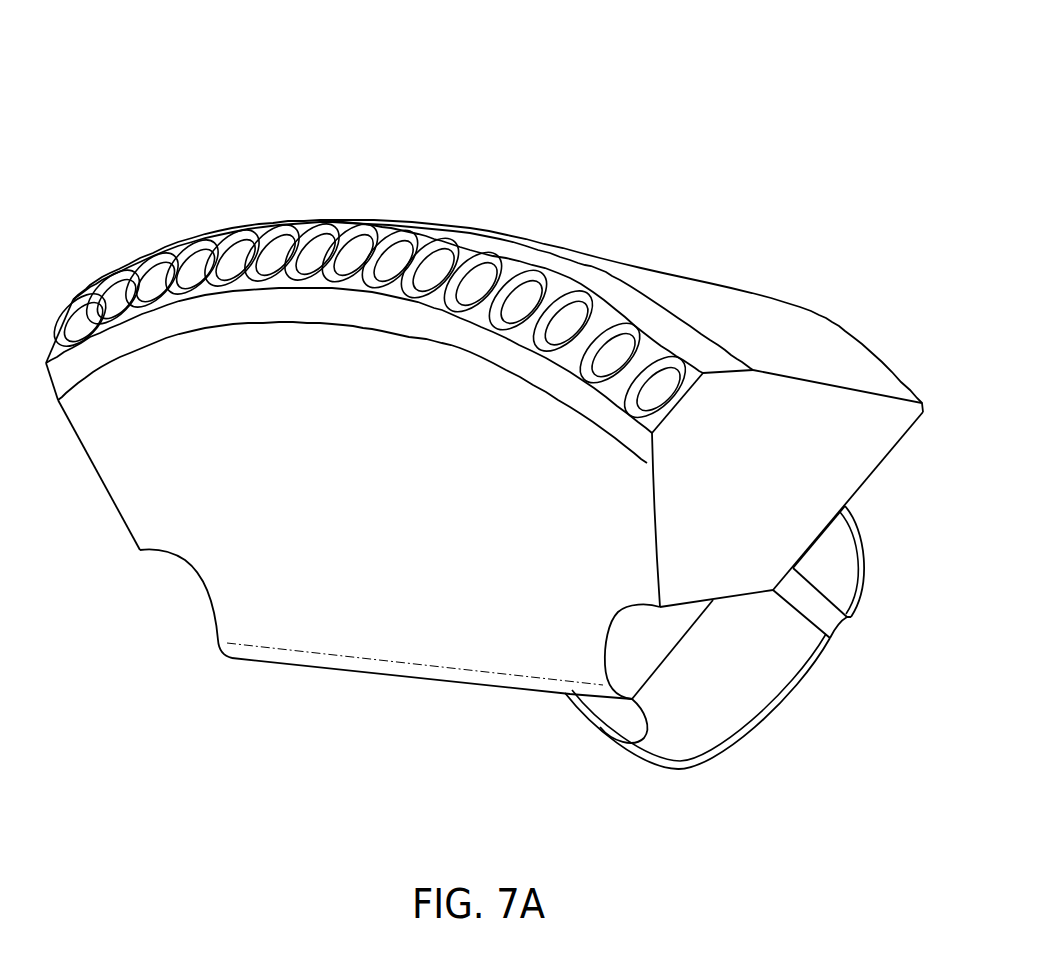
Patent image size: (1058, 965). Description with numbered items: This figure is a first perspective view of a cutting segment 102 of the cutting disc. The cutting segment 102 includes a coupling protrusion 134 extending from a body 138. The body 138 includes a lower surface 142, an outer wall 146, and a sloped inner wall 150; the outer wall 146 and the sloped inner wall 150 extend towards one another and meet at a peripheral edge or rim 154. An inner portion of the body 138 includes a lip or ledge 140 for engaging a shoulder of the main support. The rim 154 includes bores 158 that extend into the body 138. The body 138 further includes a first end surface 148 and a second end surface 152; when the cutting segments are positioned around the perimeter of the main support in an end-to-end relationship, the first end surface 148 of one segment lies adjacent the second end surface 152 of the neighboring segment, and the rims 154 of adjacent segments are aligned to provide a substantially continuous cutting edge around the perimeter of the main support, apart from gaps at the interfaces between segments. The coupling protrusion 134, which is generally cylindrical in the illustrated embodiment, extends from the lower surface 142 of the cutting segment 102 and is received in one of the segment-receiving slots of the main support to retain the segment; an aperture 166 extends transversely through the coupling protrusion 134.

The cutting segment 102 is at (720, 85).
The coupling protrusion 134 is at (660, 800).
The body 138 is at (118, 550).
The lip or ledge 140 is at (355, 646).
The lower surface 142 is at (890, 452).
The outer wall 146 is at (708, 300).
The first end surface 148 is at (820, 420).
The sloped inner wall 150 is at (217, 518).
The second end surface 152 is at (87, 446).
The peripheral edge or rim 154 is at (512, 264).
The bores 158 is at (387, 260).
The aperture 166 is at (610, 714).